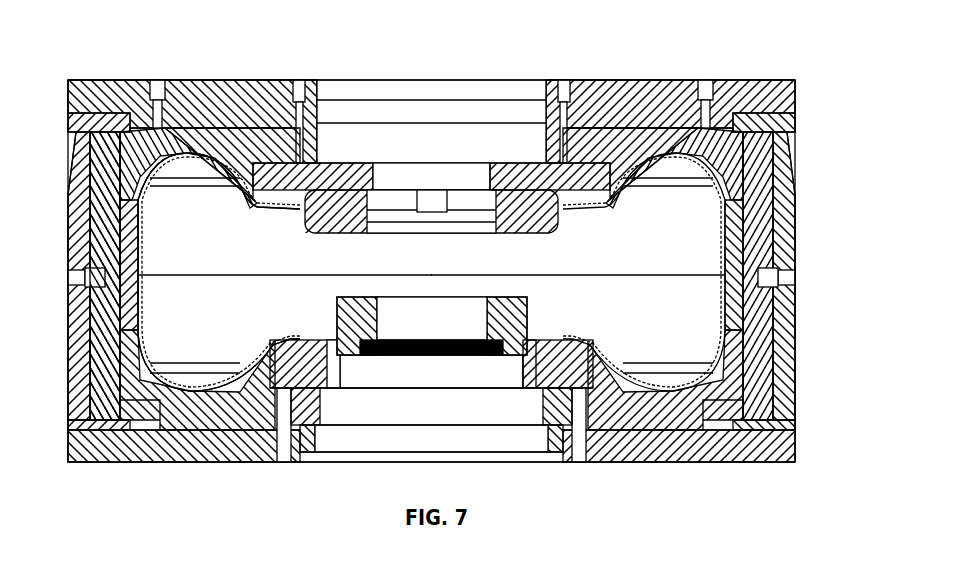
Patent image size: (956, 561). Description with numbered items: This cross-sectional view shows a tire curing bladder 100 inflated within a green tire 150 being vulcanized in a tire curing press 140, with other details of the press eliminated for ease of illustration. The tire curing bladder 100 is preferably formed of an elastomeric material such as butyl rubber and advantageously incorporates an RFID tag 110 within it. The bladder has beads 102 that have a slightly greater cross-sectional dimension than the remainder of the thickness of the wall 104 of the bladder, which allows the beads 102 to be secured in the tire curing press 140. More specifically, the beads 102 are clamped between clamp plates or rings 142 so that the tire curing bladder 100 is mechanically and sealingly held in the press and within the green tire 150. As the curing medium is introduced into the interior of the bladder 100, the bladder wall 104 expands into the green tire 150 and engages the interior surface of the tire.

The tire curing bladder 100 is at (138, 322).
The beads 102 is at (333, 197).
The wall 104 is at (242, 192).
The RFID tag 110 is at (303, 334).
The tire curing press 140 is at (579, 65).
The clamp plates or rings 142 is at (577, 183).
The green tire 150 is at (126, 224).